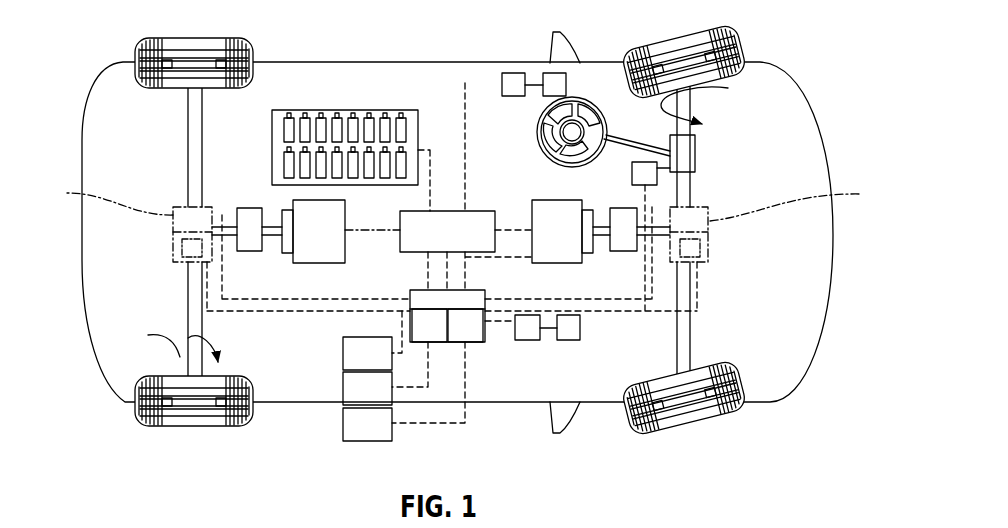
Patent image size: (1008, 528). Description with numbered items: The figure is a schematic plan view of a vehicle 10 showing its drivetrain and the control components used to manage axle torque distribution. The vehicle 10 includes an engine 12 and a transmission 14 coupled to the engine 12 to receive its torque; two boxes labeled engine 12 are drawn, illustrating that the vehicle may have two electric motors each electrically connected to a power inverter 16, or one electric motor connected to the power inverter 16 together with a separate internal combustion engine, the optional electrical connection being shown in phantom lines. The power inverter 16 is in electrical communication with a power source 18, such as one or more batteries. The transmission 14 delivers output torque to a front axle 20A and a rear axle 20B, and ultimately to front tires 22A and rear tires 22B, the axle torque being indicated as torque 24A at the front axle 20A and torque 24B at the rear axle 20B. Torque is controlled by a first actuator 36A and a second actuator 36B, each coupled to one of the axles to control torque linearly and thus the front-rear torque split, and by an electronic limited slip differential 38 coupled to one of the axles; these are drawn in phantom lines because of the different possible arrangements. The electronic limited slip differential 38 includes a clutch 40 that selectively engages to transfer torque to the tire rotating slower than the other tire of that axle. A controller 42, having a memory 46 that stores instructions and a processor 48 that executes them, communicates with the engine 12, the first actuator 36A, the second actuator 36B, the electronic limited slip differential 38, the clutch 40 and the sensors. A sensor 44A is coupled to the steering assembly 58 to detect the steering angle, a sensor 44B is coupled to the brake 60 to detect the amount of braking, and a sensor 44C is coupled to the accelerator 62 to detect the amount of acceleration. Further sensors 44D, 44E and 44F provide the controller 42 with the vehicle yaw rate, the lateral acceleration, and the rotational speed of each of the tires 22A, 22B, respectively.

The vehicle 10 is at (781, 38).
The engine 12 is at (300, 202).
The transmission 14 is at (245, 209).
The power inverter 16 is at (446, 211).
The power source 18 is at (377, 110).
The front axle 20A is at (706, 169).
The rear axle 20B is at (185, 151).
The front tires 22A is at (753, 428).
The rear tires 22B is at (159, 438).
The torque 24A is at (717, 97).
The torque 24B is at (160, 341).
The first actuator 36A is at (809, 201).
The second actuator 36B is at (96, 196).
The electronic limited slip differential 38 is at (173, 250).
The clutch 40 is at (192, 258).
The controller 42 is at (425, 290).
The sensor 44A is at (650, 163).
The sensor 44B is at (527, 331).
The sensor 44C is at (512, 72).
The sensor 44D is at (388, 368).
The sensor 44E is at (388, 402).
The sensor 44F is at (388, 437).
The memory 46 is at (443, 338).
The processor 48 is at (479, 338).
The steering assembly 58 is at (697, 140).
The brake 60 is at (572, 334).
The accelerator 62 is at (550, 72).